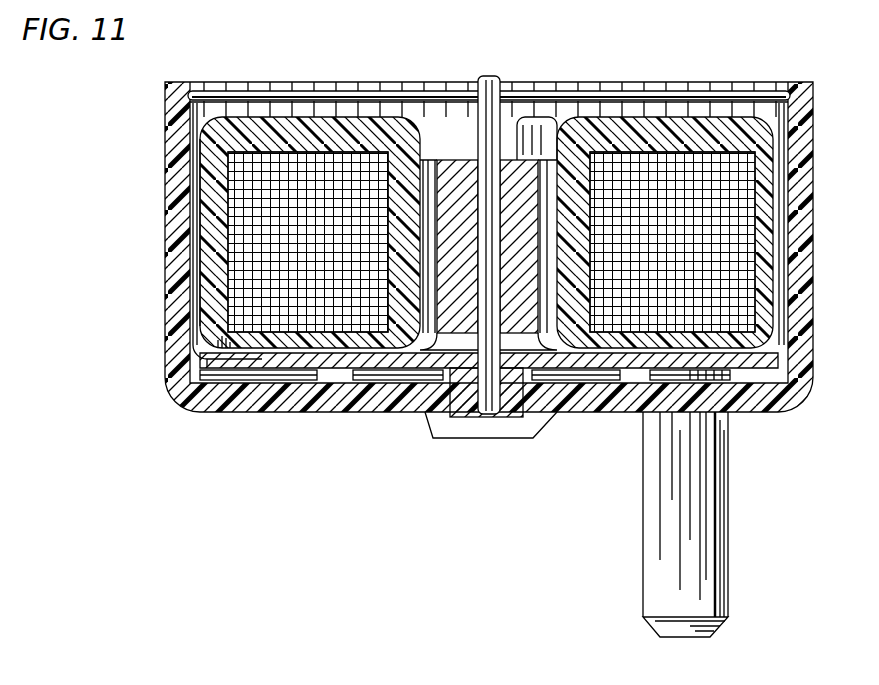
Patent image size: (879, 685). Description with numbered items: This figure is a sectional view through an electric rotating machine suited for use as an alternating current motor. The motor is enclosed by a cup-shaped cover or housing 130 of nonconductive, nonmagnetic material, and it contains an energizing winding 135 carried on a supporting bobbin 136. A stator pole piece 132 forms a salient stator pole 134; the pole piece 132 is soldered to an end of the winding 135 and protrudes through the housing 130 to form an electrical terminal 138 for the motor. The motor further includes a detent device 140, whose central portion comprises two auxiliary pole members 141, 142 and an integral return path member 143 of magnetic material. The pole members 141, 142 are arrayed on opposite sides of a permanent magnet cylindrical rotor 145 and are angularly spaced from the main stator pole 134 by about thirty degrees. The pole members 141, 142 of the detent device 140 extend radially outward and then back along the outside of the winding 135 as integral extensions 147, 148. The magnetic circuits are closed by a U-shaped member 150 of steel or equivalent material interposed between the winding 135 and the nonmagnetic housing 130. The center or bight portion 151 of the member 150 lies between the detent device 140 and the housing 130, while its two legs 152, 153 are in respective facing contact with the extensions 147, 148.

The housing 130 is at (188, 305).
The stator pole piece 132 is at (740, 548).
The salient stator pole 134 is at (538, 127).
The energizing winding 135 is at (243, 212).
The supporting bobbin 136 is at (193, 170).
The electrical terminal 138 is at (672, 605).
The detent device 140 is at (238, 116).
The auxiliary pole member 141 is at (350, 168).
The auxiliary pole member 142 is at (567, 203).
The return path member 143 is at (435, 345).
The permanent magnet cylindrical rotor 145 is at (452, 178).
The integral extension 147 is at (223, 240).
The integral extension 148 is at (765, 198).
The U-shaped member 150 is at (200, 378).
The bight portion 151 is at (545, 355).
The leg 152 is at (200, 323).
The leg 153 is at (773, 287).